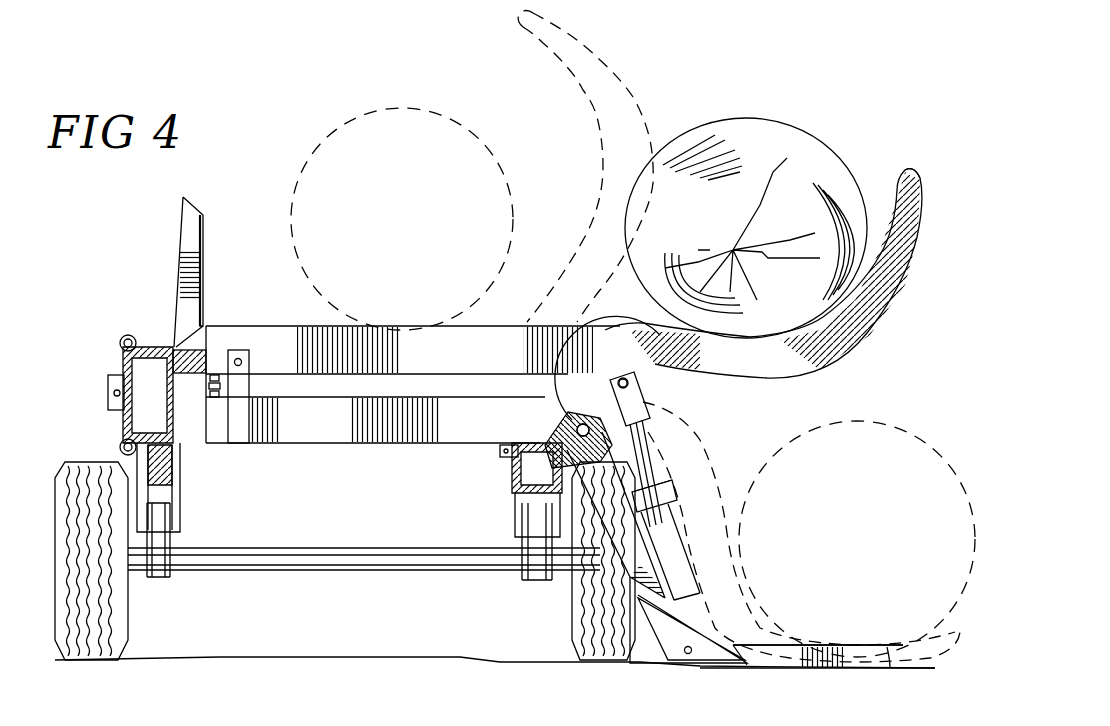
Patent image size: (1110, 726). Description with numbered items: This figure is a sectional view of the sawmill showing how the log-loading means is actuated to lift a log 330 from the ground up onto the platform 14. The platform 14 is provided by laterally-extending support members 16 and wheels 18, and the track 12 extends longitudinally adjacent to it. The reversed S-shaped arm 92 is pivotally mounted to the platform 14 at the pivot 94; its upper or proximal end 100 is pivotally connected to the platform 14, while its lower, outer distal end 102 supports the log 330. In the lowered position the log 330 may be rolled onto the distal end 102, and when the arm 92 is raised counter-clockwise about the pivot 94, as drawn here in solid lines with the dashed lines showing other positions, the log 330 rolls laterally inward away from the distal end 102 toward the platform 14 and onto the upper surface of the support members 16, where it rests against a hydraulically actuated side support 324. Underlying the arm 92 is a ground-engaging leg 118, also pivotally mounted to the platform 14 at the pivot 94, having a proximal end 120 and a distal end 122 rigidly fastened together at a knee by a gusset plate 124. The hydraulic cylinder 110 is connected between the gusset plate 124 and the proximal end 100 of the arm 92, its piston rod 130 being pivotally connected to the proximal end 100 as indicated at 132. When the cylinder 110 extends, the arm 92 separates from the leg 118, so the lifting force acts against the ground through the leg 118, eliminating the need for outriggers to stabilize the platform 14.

The track 12 is at (121, 366).
The platform 14 is at (252, 222).
The support members 16 is at (267, 332).
The wheels 18 is at (88, 476).
The arm 92 is at (646, 118).
The pivot 94 is at (576, 428).
The proximal end 100 is at (604, 397).
The distal end 102 is at (536, 48).
The hydraulic cylinder 110 is at (660, 523).
The ground-engaging leg 118 is at (772, 638).
The proximal end 120 is at (597, 460).
The distal end 122 is at (859, 652).
The gusset plate 124 is at (693, 633).
The piston rod 130 is at (647, 445).
The pivotal connection 132 is at (640, 383).
The side support 324 is at (185, 237).
The log 330 is at (350, 126).